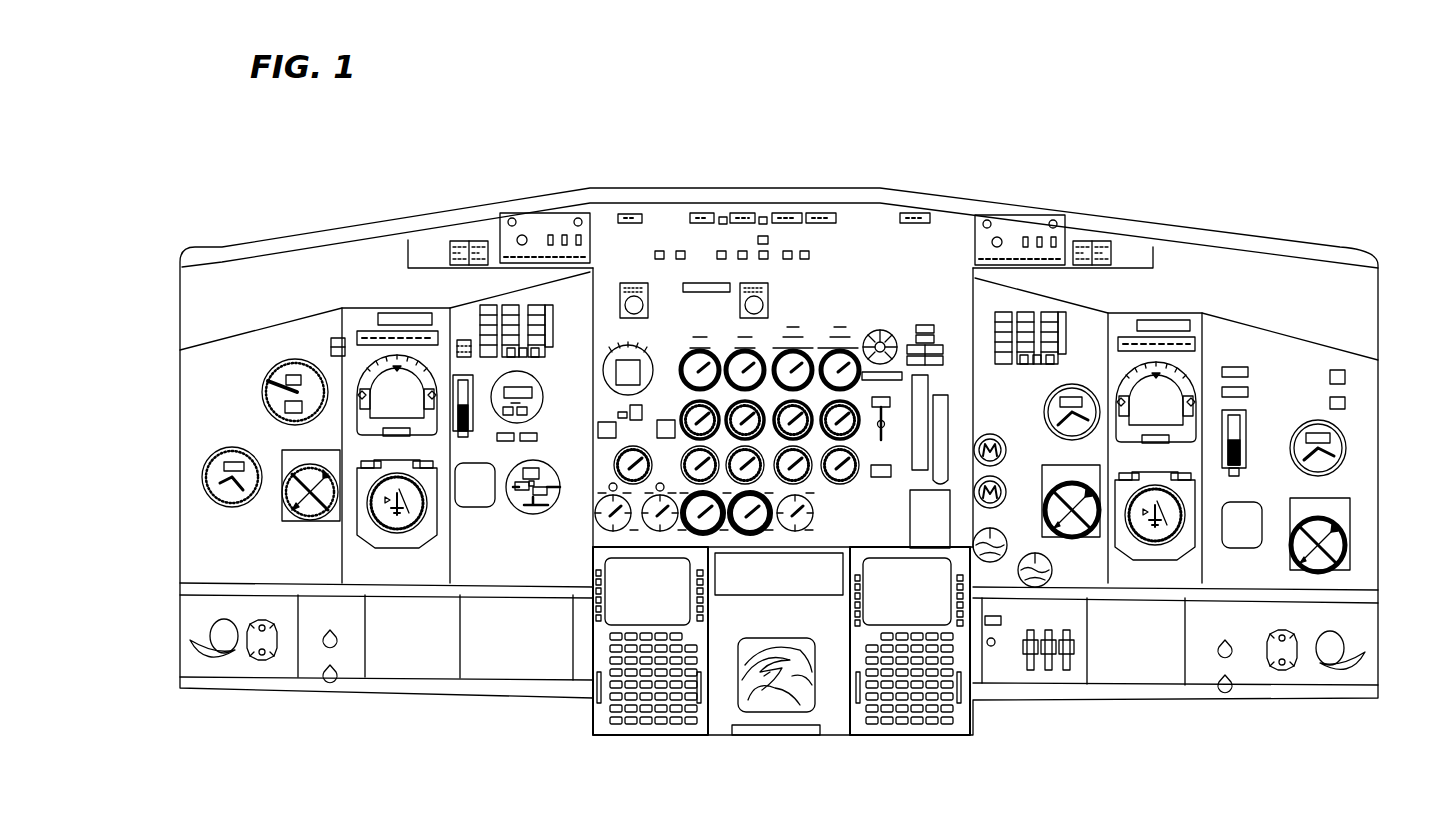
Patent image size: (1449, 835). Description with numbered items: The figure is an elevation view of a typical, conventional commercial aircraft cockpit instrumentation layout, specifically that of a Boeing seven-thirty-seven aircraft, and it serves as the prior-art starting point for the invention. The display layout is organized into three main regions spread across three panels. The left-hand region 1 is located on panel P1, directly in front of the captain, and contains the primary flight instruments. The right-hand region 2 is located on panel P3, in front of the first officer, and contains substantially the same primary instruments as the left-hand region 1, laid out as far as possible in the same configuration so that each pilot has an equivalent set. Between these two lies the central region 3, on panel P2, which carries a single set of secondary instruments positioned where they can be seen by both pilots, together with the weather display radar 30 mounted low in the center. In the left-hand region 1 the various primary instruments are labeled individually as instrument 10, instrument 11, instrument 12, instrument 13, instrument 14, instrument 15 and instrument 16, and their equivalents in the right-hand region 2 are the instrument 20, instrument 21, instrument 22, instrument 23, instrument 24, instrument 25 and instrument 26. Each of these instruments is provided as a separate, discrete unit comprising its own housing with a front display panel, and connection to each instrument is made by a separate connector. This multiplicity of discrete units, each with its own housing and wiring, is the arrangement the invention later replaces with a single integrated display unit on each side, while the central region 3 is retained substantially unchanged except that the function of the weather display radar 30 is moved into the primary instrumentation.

The left-hand region 1 is at (447, 310).
The right-hand region 2 is at (1124, 325).
The central region 3 is at (752, 212).
The instrument 10 is at (290, 396).
The instrument 11 is at (285, 493).
The instrument 12 is at (385, 385).
The instrument 13 is at (490, 310).
The instrument 14 is at (462, 374).
The instrument 15 is at (532, 380).
The instrument 16 is at (475, 493).
The equivalent instrument 20 is at (1076, 388).
The equivalent instrument 21 is at (1178, 555).
The equivalent instrument 22 is at (1168, 388).
The equivalent instrument 23 is at (995, 318).
The equivalent instrument 24 is at (1247, 440).
The equivalent instrument 25 is at (1322, 418).
The equivalent instrument 26 is at (1240, 540).
The weather display radar 30 is at (798, 703).
The panel P1 is at (222, 372).
The panel P2 is at (668, 287).
The panel P3 is at (1365, 372).